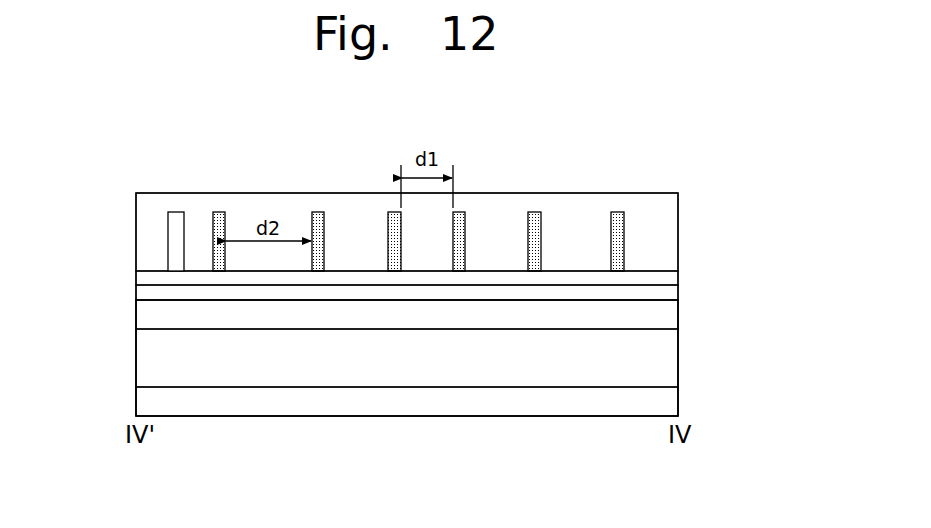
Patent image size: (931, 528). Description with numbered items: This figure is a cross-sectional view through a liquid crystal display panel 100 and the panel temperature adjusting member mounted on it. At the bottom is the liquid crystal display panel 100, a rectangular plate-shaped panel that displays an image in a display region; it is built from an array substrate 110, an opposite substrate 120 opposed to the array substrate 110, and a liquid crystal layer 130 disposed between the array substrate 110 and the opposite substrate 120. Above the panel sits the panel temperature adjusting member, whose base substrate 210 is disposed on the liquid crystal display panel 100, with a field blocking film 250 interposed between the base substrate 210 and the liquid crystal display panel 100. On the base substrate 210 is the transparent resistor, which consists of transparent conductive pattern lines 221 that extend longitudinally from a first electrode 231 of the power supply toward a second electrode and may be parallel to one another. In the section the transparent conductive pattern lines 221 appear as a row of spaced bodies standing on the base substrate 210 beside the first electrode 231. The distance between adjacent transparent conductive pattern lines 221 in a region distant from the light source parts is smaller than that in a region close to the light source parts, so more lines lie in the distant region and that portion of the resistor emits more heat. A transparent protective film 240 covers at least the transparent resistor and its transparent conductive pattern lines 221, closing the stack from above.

The liquid crystal display panel 100 is at (762, 305).
The array substrate 110 is at (667, 400).
The opposite substrate 120 is at (667, 313).
The liquid crystal layer 130 is at (667, 342).
The base substrate 210 is at (667, 280).
The field blocking film 250 is at (667, 293).
The transparent protective film 240 is at (667, 202).
The transparent conductive pattern lines 221 is at (218, 234).
The first electrode 231 is at (173, 262).